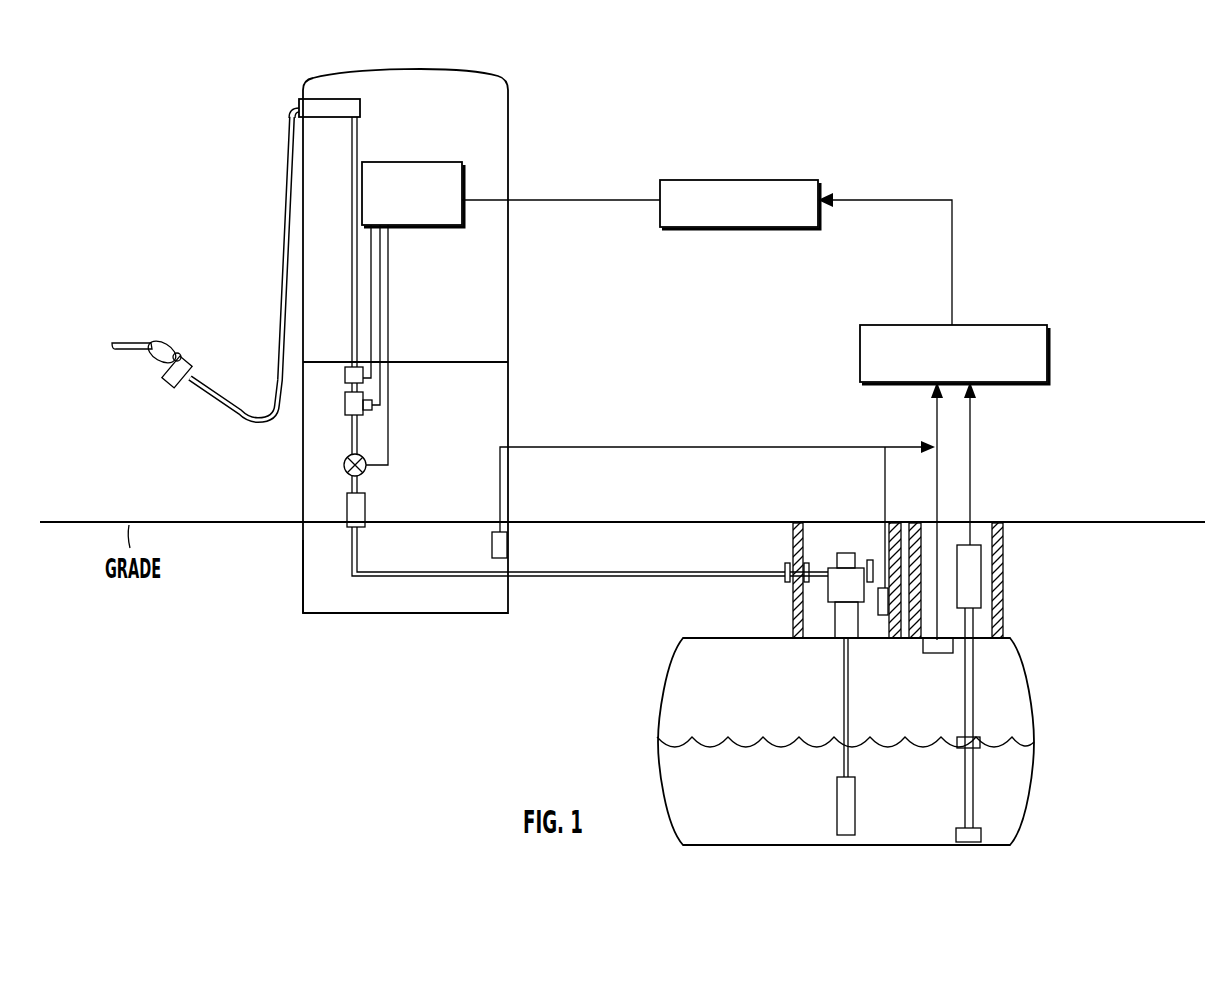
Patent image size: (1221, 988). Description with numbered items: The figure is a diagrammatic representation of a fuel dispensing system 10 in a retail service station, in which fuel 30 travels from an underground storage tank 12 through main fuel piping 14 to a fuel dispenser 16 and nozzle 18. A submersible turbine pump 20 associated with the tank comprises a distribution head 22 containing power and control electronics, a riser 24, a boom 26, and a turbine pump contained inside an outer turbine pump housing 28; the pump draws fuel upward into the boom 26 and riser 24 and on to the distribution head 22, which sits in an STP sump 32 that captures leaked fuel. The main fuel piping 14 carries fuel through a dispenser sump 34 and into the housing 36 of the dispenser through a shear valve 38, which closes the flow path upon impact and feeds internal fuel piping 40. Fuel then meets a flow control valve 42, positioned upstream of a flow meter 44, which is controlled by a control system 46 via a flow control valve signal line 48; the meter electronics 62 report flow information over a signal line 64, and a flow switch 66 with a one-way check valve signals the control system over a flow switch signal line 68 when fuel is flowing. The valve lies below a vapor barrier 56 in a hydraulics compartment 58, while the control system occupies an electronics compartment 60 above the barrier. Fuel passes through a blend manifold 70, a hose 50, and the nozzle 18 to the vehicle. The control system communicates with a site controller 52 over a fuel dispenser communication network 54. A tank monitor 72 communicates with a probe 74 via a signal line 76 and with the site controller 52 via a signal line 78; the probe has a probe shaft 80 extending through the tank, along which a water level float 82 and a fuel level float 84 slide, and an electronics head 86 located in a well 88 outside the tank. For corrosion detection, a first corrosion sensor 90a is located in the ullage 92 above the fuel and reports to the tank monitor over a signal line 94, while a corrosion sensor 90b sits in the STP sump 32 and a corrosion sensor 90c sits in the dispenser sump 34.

The fuel dispensing system 10 is at (900, 107).
The underground storage tank 12 is at (874, 741).
The main fuel piping 14 is at (612, 584).
The fuel dispenser 16 is at (479, 35).
The nozzle 18 is at (155, 309).
The submersible turbine pump 20 is at (819, 556).
The distribution head 22 is at (836, 588).
The riser 24 is at (842, 619).
The boom 26 is at (851, 726).
The outer turbine pump housing 28 is at (856, 801).
The fuel 30 is at (722, 800).
The STP sump 32 is at (793, 539).
The dispenser sump 34 is at (303, 560).
The housing 36 is at (509, 139).
The shear valve 38 is at (366, 512).
The internal fuel piping 40 is at (351, 263).
The flow control valve 42 is at (349, 472).
The flow meter 44 is at (345, 410).
The control system 46 is at (402, 161).
The flow control valve signal line 48 is at (389, 338).
The hose 50 is at (289, 115).
The site controller 52 is at (748, 180).
The fuel dispenser communication network 54 is at (598, 200).
The vapor barrier 56 is at (421, 364).
The hydraulics compartment 58 is at (507, 386).
The electronics compartment 60 is at (507, 337).
The electronics 62 is at (372, 408).
The signal line 64 is at (381, 270).
The flow switch 66 is at (345, 376).
The flow switch signal line 68 is at (366, 307).
The blend manifold 70 is at (331, 108).
The tank monitor 72 is at (980, 325).
The probe 74 is at (987, 560).
The signal line 76 is at (971, 460).
The signal line 78 is at (953, 233).
The probe shaft 80 is at (974, 705).
The water level float 82 is at (975, 828).
The fuel level float 84 is at (957, 741).
The electronics head 86 is at (975, 579).
The well 88 is at (1004, 613).
The first corrosion sensor 90a is at (931, 654).
The corrosion sensor 90b is at (878, 616).
The corrosion sensor 90c is at (491, 554).
The ullage 92 is at (722, 685).
The signal line 94 is at (936, 408).